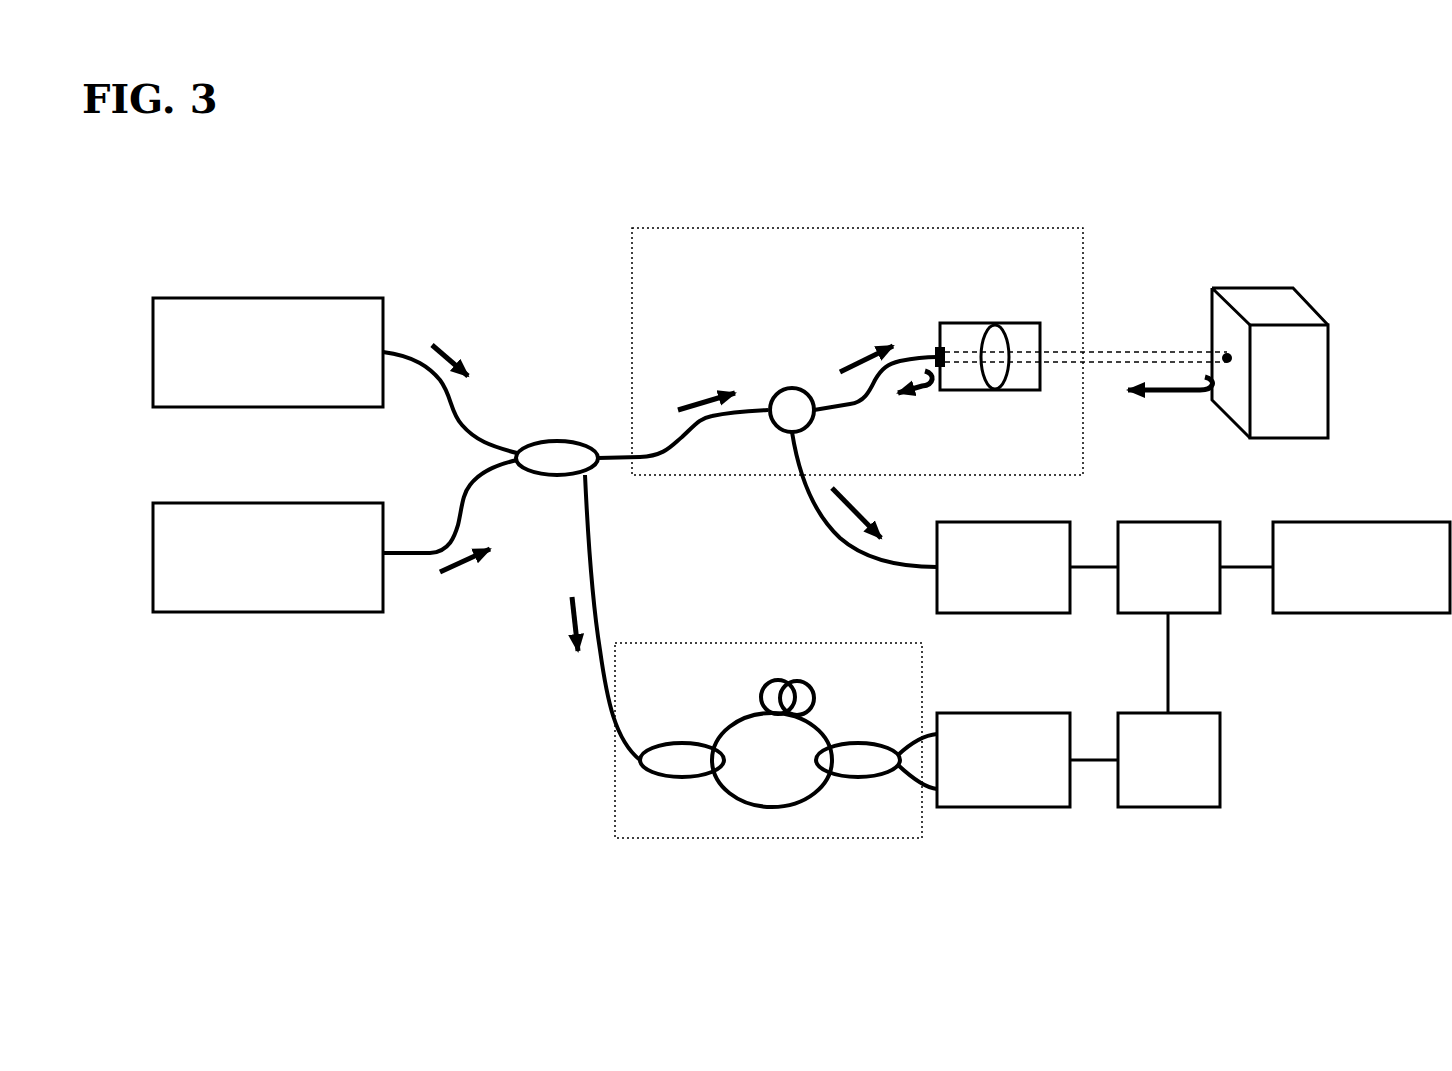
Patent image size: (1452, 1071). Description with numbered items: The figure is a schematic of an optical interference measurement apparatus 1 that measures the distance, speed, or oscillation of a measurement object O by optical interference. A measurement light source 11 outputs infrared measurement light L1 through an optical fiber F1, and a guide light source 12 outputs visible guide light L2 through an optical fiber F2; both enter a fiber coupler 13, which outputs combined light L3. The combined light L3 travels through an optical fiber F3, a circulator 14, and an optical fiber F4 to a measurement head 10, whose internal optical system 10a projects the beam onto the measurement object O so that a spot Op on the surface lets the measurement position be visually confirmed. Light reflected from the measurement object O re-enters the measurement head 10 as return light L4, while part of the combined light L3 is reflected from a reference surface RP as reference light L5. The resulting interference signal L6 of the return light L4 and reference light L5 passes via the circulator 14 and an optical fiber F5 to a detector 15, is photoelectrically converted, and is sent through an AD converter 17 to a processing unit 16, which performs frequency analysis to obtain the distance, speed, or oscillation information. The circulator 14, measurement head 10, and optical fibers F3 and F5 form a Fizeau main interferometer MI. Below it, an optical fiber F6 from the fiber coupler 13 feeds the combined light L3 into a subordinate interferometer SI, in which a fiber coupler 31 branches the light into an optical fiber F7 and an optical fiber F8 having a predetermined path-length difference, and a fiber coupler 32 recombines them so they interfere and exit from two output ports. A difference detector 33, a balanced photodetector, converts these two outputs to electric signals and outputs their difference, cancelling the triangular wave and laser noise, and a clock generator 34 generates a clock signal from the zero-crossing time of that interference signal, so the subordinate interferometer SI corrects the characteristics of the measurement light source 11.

The optical interference measurement apparatus 1 is at (195, 234).
The measurement light source 11 is at (320, 298).
The guide light source 12 is at (320, 503).
The fiber coupler 13 is at (555, 441).
The circulator 14 is at (790, 388).
The detector 15 is at (1025, 615).
The processing unit 16 is at (1392, 522).
The AD converter 17 is at (1202, 617).
The measurement head 10 is at (1030, 323).
The optical system 10a is at (995, 327).
The fiber coupler 31 is at (678, 743).
The fiber coupler 32 is at (858, 745).
The difference detector 33 is at (1023, 807).
The clock generator 34 is at (1173, 807).
The reference surface RP is at (937, 350).
The measurement object O is at (1267, 297).
The spot Op is at (1224, 353).
The main interferometer MI is at (632, 289).
The subordinate interferometer SI is at (615, 800).
The optical fiber F1 is at (450, 402).
The optical fiber F2 is at (450, 506).
The optical fiber F3 is at (683, 436).
The optical fiber F4 is at (875, 397).
The optical fiber F5 is at (849, 499).
The optical fiber F6 is at (612, 617).
The optical fiber F7 is at (778, 685).
The optical fiber F8 is at (768, 774).
The measurement light L1 is at (453, 346).
The guide light L2 is at (465, 576).
The combined light L3 is at (713, 483).
The return light L4 is at (1162, 406).
The reference light L5 is at (914, 404).
The interference signal L6 is at (864, 513).